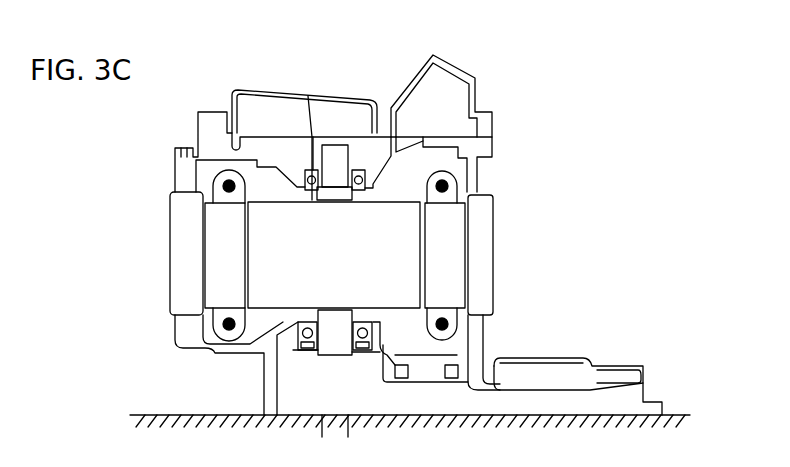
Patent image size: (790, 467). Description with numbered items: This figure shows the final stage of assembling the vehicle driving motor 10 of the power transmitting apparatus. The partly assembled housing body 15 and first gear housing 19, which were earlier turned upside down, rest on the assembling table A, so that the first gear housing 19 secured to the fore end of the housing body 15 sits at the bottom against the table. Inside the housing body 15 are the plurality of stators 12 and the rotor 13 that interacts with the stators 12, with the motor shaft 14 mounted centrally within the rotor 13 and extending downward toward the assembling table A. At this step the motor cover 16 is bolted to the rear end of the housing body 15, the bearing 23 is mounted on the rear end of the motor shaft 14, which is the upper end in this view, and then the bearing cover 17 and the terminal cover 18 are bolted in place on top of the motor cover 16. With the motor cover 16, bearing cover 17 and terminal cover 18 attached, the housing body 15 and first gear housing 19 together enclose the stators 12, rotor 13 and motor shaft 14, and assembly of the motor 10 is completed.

The vehicle driving motor 10 is at (575, 215).
The stators 12 is at (453, 292).
The rotor 13 is at (395, 247).
The motor shaft 14 is at (337, 345).
The housing body 15 is at (482, 255).
The motor cover 16 is at (473, 173).
The bearing cover 17 is at (342, 94).
The terminal cover 18 is at (477, 93).
The first gear housing 19 is at (483, 343).
The bearing 23 is at (308, 96).
The assembling table A is at (674, 414).